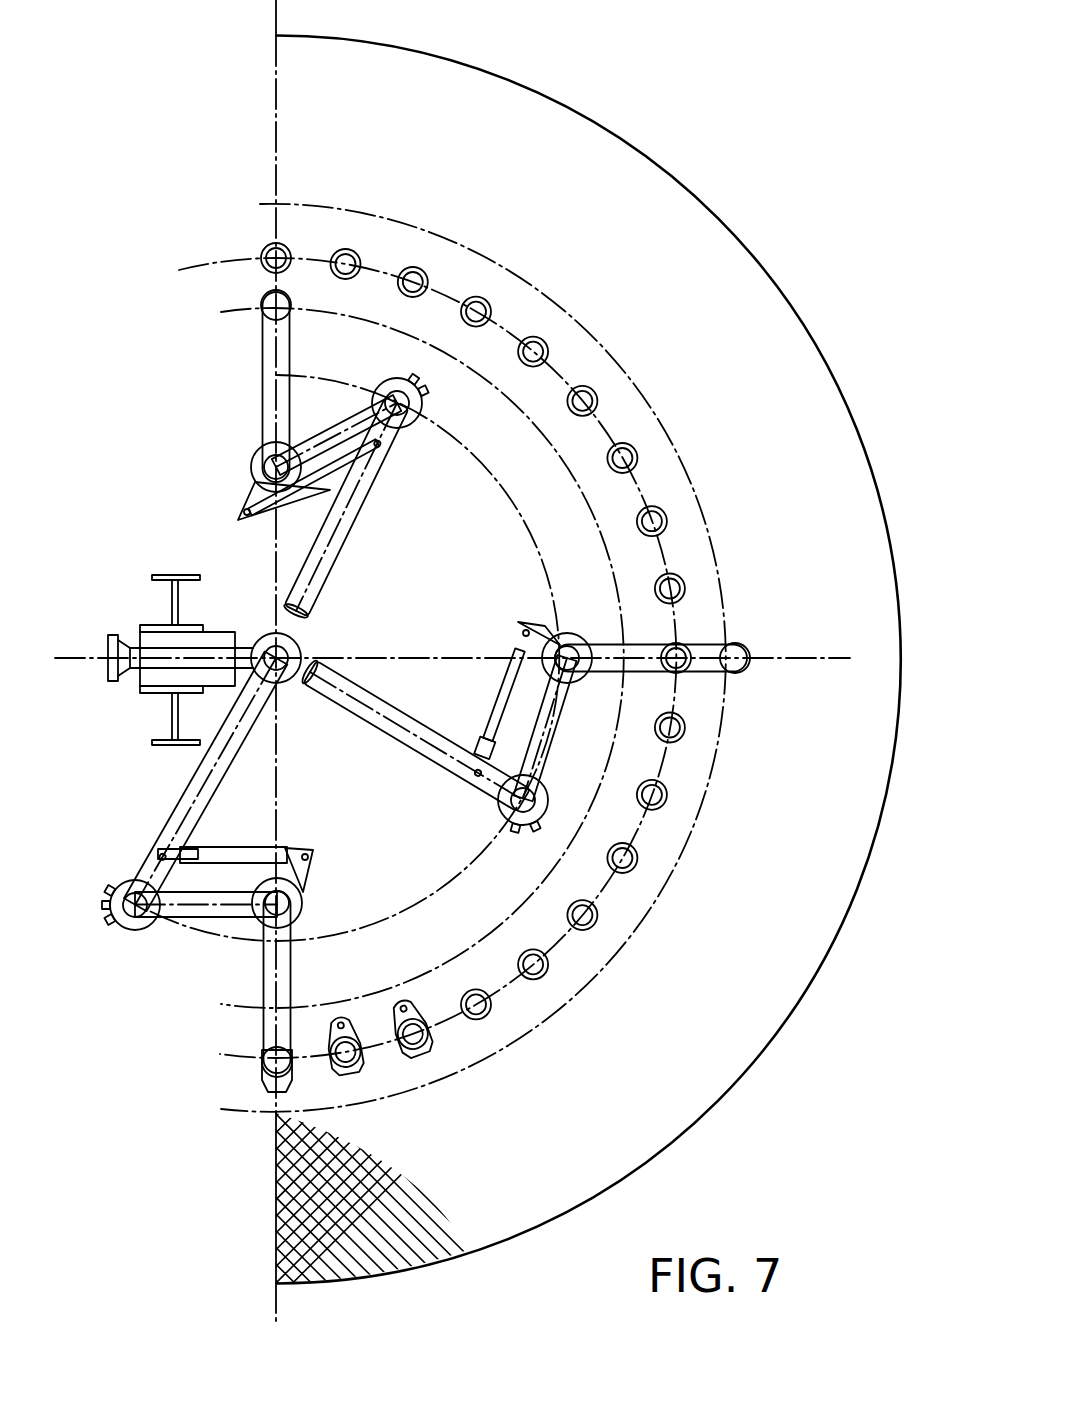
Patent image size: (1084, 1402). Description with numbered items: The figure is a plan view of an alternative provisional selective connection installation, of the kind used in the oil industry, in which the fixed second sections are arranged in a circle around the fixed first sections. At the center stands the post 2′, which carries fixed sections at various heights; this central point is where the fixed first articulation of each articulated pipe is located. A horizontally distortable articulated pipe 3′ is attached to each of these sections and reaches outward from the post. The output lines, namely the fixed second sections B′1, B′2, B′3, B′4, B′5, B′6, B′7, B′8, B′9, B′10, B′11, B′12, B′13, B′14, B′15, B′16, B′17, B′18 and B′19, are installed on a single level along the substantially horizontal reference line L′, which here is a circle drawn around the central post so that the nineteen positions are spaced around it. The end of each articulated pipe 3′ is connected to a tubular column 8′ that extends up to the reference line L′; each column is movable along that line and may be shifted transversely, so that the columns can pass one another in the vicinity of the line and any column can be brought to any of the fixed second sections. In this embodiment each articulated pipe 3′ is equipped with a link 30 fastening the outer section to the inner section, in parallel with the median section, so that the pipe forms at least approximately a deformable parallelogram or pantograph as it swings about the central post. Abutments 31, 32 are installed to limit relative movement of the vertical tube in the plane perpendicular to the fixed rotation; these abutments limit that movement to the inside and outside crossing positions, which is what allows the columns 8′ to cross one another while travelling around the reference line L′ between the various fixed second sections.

The post 2′ is at (140, 683).
The articulated pipe 3′ is at (352, 713).
The tubular column 8′ is at (261, 305).
The link 30 is at (497, 698).
The abutment 31 is at (117, 921).
The abutment 32 is at (128, 890).
The reference line L′ is at (178, 262).
The fixed second section B′1 is at (262, 1081).
The fixed second section B′2 is at (344, 1063).
The fixed second section B′3 is at (411, 1043).
The fixed second section B′4 is at (479, 1019).
The fixed second section B′5 is at (541, 979).
The fixed second section B′6 is at (588, 929).
The fixed second section B′7 is at (630, 872).
The fixed second section B′8 is at (664, 810).
The fixed second section B′9 is at (684, 742).
The fixed second section B′10 is at (693, 649).
The fixed second section B′11 is at (686, 580).
The fixed second section B′12 is at (666, 512).
The fixed second section B′13 is at (634, 449).
The fixed second section B′14 is at (592, 392).
The fixed second section B′15 is at (541, 342).
The fixed second section B′16 is at (485, 302).
The fixed second section B′17 is at (427, 270).
The fixed second section B′18 is at (362, 252).
The fixed second section B′19 is at (295, 247).